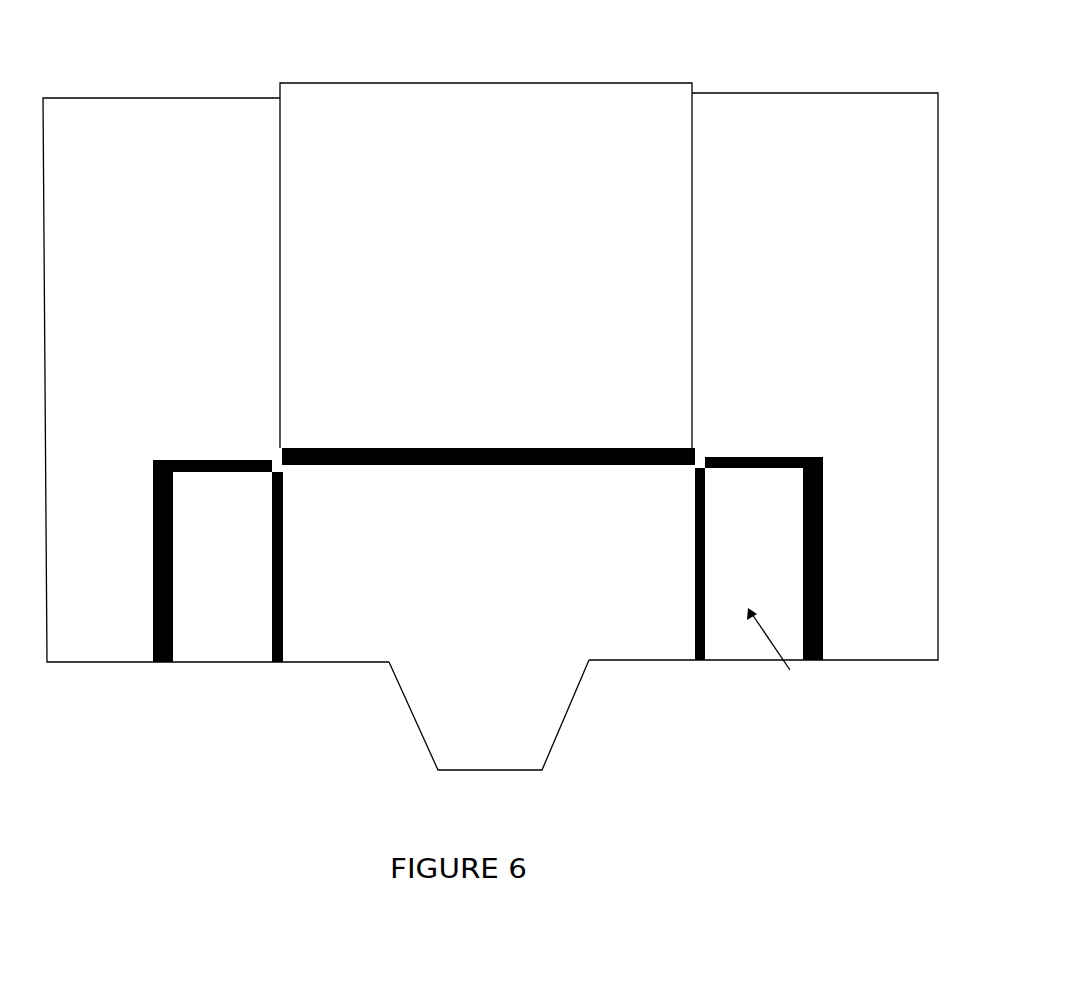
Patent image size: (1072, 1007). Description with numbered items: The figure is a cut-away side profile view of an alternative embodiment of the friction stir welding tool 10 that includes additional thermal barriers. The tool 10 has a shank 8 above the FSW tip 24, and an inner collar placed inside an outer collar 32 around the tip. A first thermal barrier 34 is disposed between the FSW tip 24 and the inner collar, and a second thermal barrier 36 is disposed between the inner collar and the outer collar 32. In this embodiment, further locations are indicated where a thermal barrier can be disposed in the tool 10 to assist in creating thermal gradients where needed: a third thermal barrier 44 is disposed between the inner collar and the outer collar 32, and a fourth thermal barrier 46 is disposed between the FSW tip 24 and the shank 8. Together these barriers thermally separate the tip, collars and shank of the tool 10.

The shank 8 is at (577, 102).
The tool 10 is at (538, 402).
The FSW tip 24 is at (333, 652).
The outer collar 32 is at (927, 250).
The first thermal barrier 34 is at (695, 572).
The second thermal barrier 36 is at (823, 580).
The third thermal barrier 44 is at (773, 452).
The fourth thermal barrier 46 is at (550, 445).